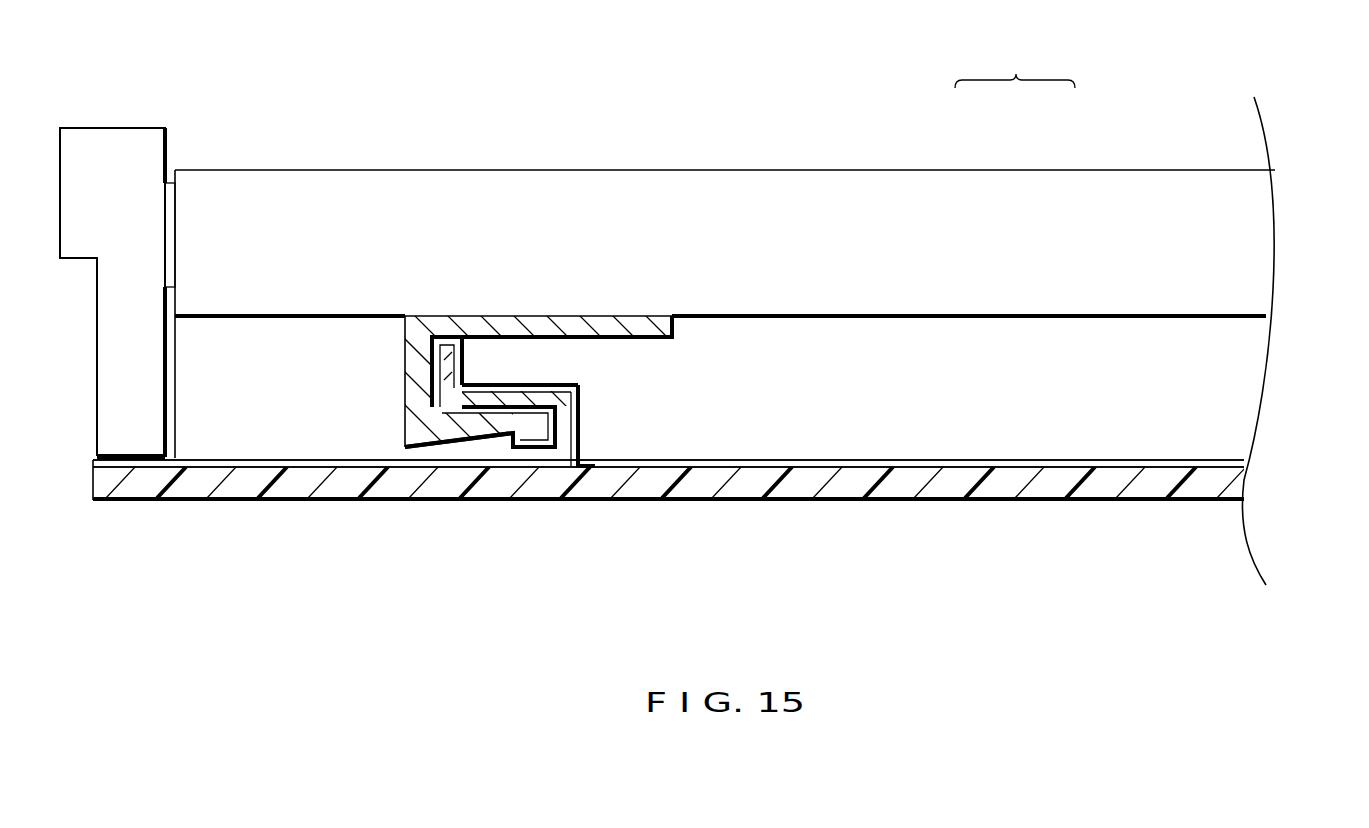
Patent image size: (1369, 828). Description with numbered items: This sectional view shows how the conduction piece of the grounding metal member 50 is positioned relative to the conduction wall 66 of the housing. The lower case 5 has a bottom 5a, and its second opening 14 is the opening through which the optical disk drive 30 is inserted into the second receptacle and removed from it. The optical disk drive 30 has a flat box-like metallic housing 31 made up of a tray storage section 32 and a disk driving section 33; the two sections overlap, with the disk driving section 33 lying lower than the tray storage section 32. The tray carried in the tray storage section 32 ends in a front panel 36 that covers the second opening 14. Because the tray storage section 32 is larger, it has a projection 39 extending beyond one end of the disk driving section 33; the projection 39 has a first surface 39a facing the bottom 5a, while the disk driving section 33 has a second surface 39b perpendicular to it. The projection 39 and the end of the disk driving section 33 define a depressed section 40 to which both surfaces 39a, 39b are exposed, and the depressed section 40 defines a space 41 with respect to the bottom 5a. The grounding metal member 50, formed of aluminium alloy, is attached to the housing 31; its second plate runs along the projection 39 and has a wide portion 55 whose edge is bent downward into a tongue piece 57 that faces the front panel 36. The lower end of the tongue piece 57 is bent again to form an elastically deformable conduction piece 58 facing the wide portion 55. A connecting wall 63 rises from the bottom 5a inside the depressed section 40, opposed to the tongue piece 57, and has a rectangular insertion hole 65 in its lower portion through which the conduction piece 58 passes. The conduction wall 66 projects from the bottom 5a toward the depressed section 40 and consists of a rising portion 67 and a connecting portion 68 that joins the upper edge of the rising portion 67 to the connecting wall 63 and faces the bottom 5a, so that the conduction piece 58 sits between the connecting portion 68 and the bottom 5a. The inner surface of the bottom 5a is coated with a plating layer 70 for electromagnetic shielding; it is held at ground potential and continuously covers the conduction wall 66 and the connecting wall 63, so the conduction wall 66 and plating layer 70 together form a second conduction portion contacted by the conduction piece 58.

The lower case 5 is at (1090, 505).
The bottom 5a is at (190, 485).
The second opening 14 is at (124, 452).
The optical disk drive 30 is at (289, 196).
The housing 31 is at (1015, 59).
The tray storage section 32 is at (1050, 200).
The disk driving section 33 is at (977, 345).
The front panel 36 is at (110, 138).
The projection 39 is at (1250, 242).
The first surface 39a is at (1240, 318).
The second surface 39b is at (1228, 403).
The depressed section 40 is at (847, 420).
The space 41 is at (764, 397).
The grounding metal member 50 is at (455, 318).
The wide portion 55 is at (603, 332).
The tongue piece 57 is at (404, 380).
The conduction piece 58 is at (462, 435).
The connecting wall 63 is at (470, 362).
The rectangular insertion hole 65 is at (432, 453).
The conduction wall 66 is at (539, 506).
The rising portion 67 is at (567, 410).
The connecting portion 68 is at (515, 400).
The plating layer 70 is at (968, 470).